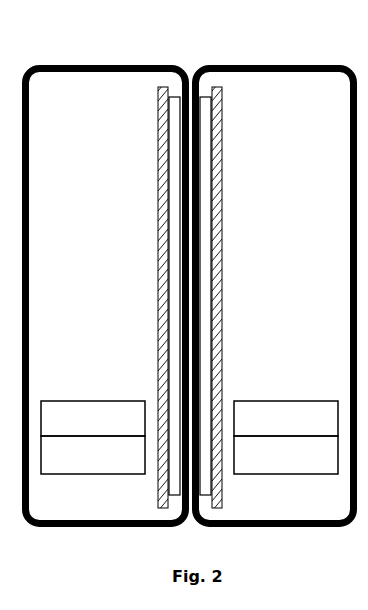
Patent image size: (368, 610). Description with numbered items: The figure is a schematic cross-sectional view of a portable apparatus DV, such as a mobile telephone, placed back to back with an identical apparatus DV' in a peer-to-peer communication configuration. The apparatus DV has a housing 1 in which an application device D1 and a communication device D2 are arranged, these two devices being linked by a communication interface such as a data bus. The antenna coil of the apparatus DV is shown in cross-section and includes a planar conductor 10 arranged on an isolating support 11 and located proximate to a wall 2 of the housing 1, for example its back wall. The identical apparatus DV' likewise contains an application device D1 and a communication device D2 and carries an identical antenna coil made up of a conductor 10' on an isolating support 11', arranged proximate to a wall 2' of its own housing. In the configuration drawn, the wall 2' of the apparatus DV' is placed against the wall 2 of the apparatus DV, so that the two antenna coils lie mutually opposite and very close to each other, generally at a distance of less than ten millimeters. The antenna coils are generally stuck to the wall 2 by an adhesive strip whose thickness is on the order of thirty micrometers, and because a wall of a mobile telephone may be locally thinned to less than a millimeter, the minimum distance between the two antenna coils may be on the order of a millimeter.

The housing 1 is at (80, 65).
The portable apparatus DV is at (53, 93).
The apparatus DV' is at (320, 93).
The planar conductor 10 is at (126, 295).
The conductor 10' is at (262, 295).
The isolating support 11 is at (145, 296).
The isolating support 11' is at (243, 296).
The wall 2 is at (149, 295).
The wall 2' is at (238, 295).
The application device D1 is at (83, 426).
The communication device D2 is at (83, 464).